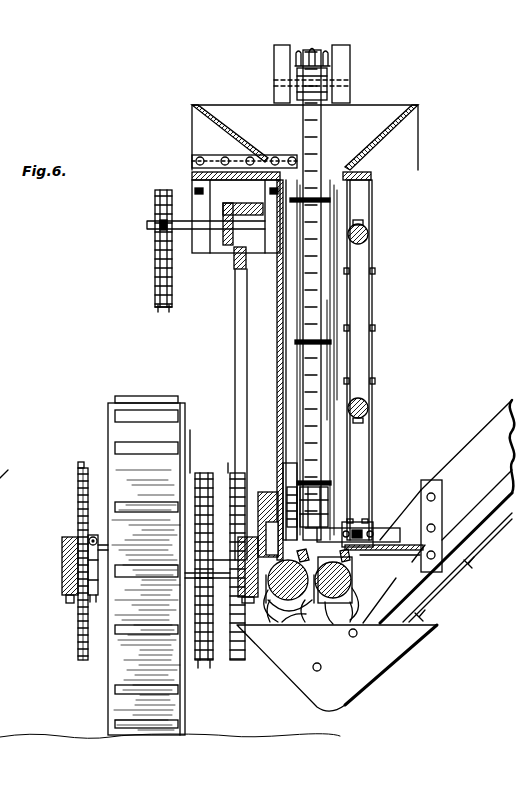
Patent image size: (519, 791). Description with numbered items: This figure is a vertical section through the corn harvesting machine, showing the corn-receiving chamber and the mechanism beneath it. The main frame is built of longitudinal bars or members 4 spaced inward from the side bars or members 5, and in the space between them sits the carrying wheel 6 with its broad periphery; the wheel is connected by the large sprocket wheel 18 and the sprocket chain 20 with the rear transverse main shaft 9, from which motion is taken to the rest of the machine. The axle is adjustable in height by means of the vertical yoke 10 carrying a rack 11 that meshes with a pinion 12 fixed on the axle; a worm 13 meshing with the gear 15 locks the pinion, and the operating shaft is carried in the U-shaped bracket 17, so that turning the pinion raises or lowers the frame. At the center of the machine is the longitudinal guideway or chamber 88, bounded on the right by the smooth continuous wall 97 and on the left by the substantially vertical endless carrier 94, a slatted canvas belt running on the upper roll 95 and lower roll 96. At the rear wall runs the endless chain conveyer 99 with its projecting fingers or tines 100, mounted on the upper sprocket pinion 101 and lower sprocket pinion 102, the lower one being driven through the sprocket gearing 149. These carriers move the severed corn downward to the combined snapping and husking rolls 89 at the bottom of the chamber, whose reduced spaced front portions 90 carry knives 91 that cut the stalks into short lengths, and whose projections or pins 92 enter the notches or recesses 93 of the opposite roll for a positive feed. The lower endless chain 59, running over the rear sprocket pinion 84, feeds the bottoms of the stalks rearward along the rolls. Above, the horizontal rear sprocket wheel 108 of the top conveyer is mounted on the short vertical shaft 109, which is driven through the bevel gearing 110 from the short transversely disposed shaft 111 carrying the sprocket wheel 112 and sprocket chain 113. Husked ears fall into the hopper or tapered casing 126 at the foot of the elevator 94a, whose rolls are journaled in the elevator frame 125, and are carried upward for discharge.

The longitudinal bars or members 4 is at (250, 603).
The side bars or members 5 is at (62, 556).
The carrying wheel 6 is at (108, 407).
The rear transverse main shaft 9 is at (4, 455).
The vertical yoke 10 is at (78, 477).
The rack 11 is at (78, 509).
The pinion 12 is at (62, 584).
The worm 13 is at (95, 535).
The gear 15 is at (93, 597).
The U-shaped bracket 17 is at (105, 548).
The large sprocket wheel 18 is at (198, 470).
The sprocket chain 20 is at (208, 663).
The lower endless chain 59 is at (375, 531).
The rear sprocket pinion 84 is at (372, 523).
The longitudinal guideway or chamber 88 is at (332, 295).
The combined snapping and husking rolls 89 is at (352, 606).
The reduced spaced front portions 90 is at (294, 566).
The knives 91 is at (292, 654).
The projections or pins 92 is at (352, 577).
The notches or recesses 93 is at (360, 637).
The endless carrier 94 is at (372, 306).
The elevator 94a is at (436, 481).
The upper roll 95 is at (366, 230).
The lower roll 96 is at (368, 410).
The smooth continuous wall 97 is at (277, 323).
The endless chain conveyer 99 is at (320, 128).
The projecting fingers or tines 100 is at (312, 50).
The upper sprocket pinion 101 is at (330, 76).
The lower sprocket pinion 102 is at (323, 490).
The horizontal rear sprocket wheel 108 is at (268, 158).
The short vertical shaft 109 is at (236, 216).
The bevel gearing 110 is at (231, 248).
The short transversely disposed shaft 111 is at (186, 232).
The sprocket wheel 112 is at (155, 246).
The sprocket chain 113 is at (157, 302).
The elevator frame 125 is at (476, 436).
The hopper or tapered casing 126 is at (337, 668).
The sprocket gearing 149 is at (283, 483).